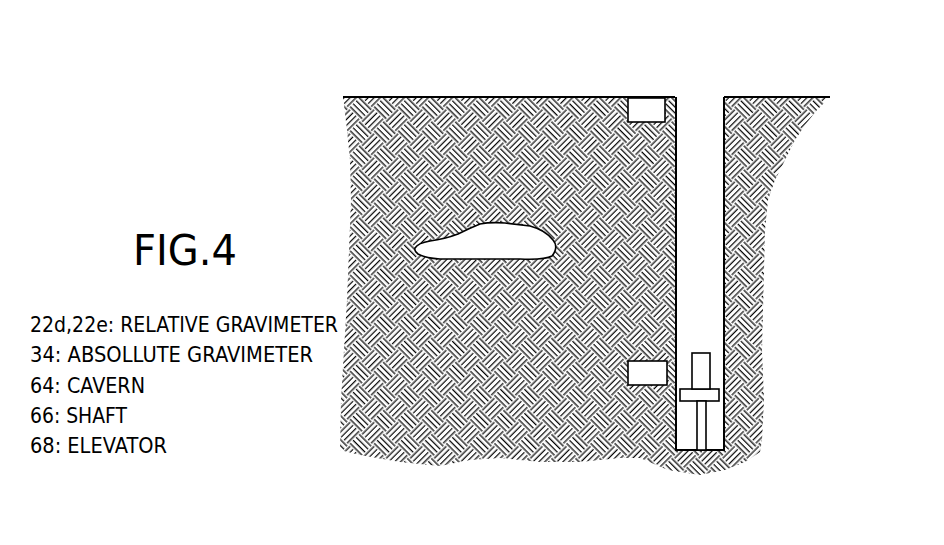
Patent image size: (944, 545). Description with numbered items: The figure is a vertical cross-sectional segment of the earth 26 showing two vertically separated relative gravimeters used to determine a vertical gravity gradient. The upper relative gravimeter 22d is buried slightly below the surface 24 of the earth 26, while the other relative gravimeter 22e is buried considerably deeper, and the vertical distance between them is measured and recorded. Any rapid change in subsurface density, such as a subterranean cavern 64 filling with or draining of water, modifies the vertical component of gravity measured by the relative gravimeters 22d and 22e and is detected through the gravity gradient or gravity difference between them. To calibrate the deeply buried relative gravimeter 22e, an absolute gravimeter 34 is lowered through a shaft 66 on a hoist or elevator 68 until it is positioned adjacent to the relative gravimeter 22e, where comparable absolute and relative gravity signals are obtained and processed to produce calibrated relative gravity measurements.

The relative gravimeter 22d is at (650, 108).
The relative gravimeter 22e is at (645, 377).
The surface 24 is at (510, 97).
The earth 26 is at (360, 205).
The absolute gravimeter 34 is at (703, 364).
The subterranean cavern 64 is at (500, 248).
The shaft 66 is at (723, 110).
The elevator 68 is at (706, 410).